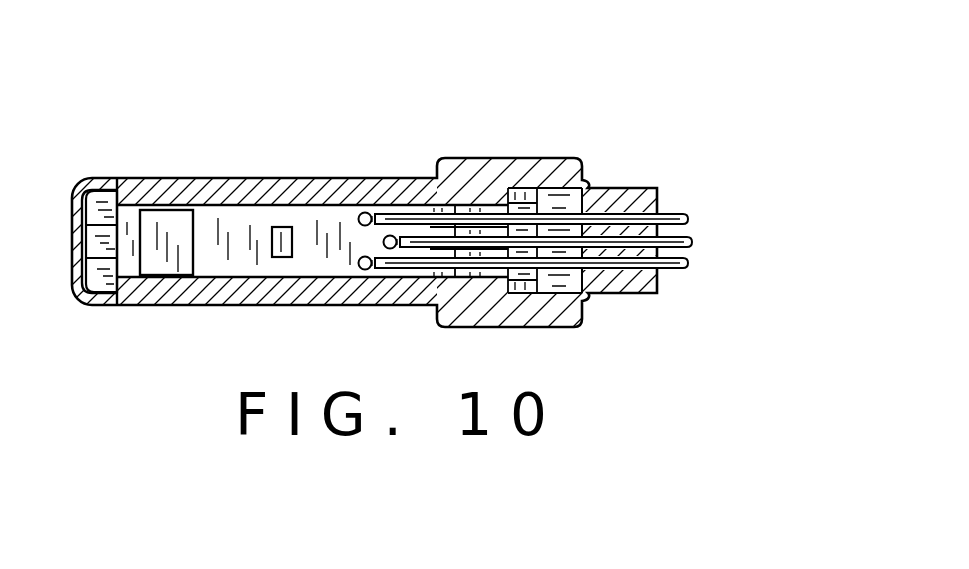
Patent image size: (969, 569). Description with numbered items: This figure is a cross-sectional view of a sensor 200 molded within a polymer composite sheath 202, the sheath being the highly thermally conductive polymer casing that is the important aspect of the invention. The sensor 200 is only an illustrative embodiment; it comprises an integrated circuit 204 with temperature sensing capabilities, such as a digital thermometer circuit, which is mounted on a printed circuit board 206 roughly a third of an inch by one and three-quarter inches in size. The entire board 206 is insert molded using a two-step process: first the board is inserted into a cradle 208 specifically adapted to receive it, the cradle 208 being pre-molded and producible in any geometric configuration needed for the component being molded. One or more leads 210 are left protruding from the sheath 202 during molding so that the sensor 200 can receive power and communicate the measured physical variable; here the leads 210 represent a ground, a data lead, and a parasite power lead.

The sensor 200 is at (564, 128).
The polymer composite sheath 202 is at (273, 178).
The integrated circuit 204 is at (168, 235).
The printed circuit board 206 is at (240, 248).
The cradle 208 is at (321, 247).
The leads 210 is at (690, 263).